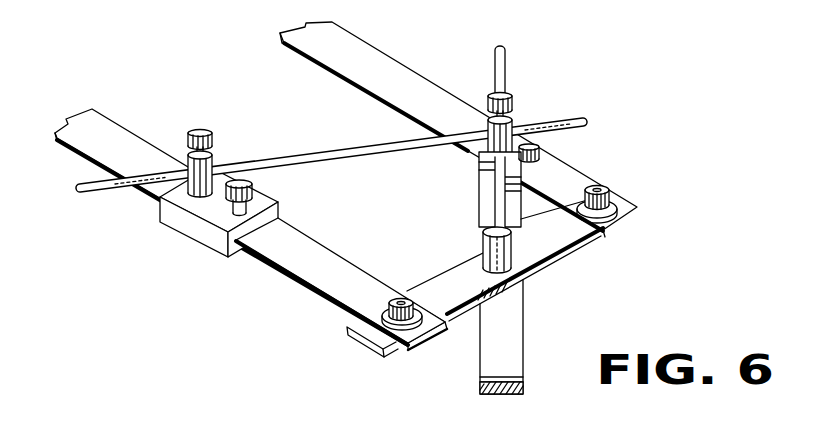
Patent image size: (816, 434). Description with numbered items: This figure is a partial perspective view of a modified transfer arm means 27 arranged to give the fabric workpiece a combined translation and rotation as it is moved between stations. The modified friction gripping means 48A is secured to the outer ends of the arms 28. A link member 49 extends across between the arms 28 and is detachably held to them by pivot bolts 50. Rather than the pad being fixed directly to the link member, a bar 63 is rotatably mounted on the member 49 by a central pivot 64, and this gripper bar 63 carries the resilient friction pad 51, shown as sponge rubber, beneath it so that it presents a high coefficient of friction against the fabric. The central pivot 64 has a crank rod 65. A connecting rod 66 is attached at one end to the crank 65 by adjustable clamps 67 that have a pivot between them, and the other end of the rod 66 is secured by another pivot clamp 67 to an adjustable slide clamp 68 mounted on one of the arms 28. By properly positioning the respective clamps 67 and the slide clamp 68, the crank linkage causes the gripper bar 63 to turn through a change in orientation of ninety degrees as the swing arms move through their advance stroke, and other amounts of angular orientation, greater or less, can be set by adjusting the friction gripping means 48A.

The arm means 27 is at (118, 255).
The arms 28 is at (340, 35).
The friction gripping means 48A is at (606, 277).
The link member 49 is at (556, 235).
The pivot bolts 50 is at (397, 300).
The resilient pad 51 is at (489, 393).
The bar 63 is at (498, 353).
The central pivot 64 is at (492, 248).
The crank rod 65 is at (500, 194).
The connecting rod 66 is at (290, 153).
The adjustable clamps 67 is at (214, 167).
The adjustable slide clamp 68 is at (205, 237).